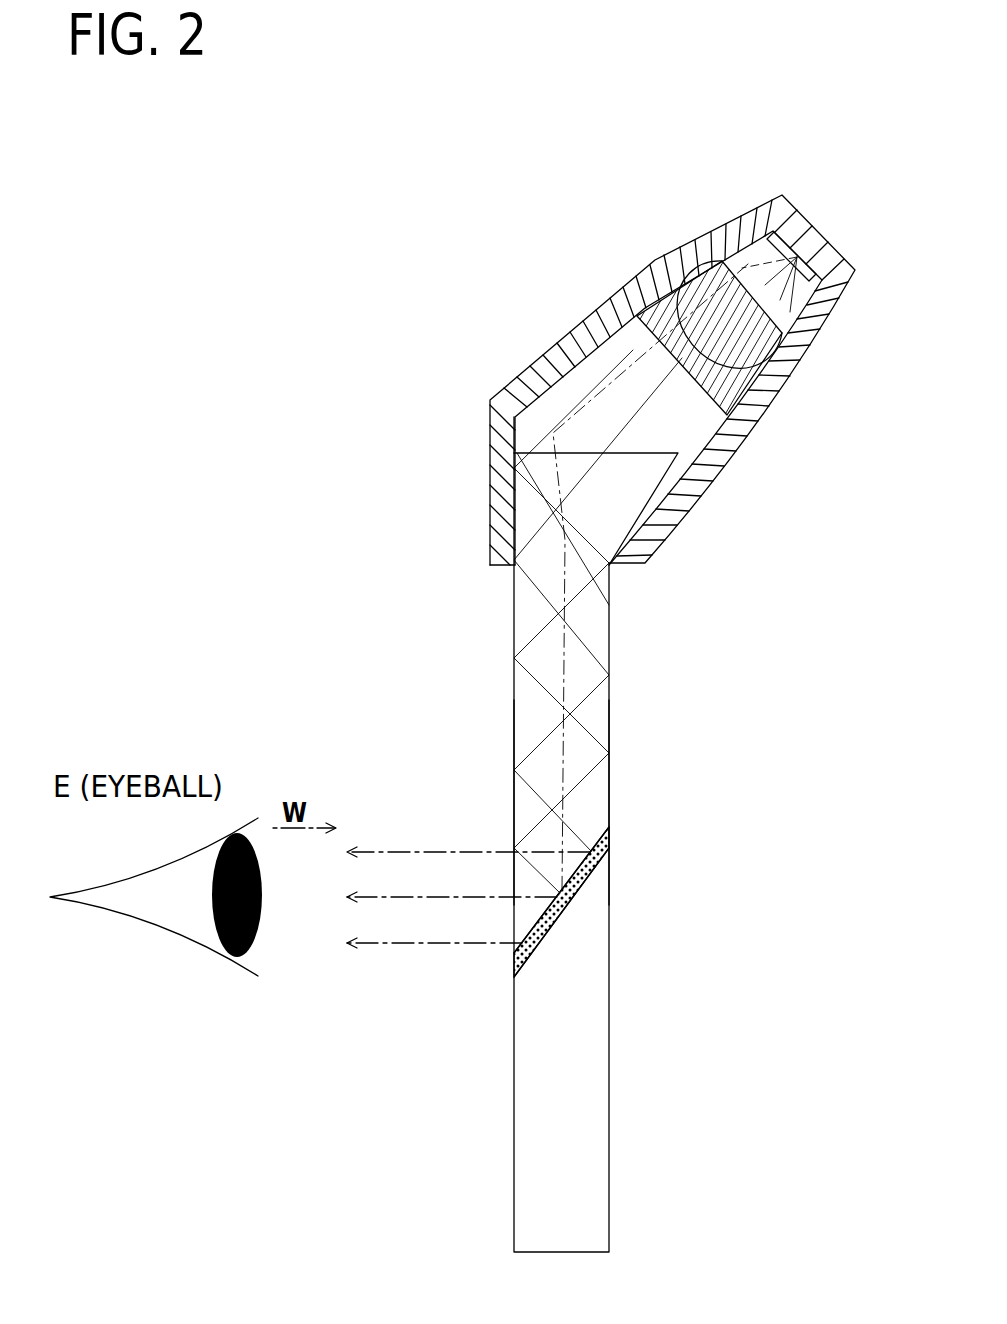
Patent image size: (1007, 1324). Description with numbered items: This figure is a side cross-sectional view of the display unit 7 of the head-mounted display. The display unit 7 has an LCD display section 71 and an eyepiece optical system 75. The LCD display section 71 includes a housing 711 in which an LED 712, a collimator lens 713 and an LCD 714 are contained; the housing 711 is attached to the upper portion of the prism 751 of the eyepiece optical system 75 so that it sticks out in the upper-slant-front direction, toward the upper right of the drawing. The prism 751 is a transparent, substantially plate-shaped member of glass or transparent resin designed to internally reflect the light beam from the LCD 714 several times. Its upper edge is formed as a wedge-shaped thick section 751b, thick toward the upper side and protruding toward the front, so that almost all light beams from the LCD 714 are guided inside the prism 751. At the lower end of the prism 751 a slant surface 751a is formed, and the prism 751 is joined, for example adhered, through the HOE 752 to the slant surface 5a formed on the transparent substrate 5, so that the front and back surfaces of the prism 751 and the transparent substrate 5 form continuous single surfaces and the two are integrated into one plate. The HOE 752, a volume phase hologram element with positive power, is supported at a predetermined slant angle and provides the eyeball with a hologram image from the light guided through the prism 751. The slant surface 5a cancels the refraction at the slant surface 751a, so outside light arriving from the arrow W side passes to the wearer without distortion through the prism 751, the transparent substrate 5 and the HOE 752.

The display unit 7 is at (398, 272).
The LCD display section 71 is at (706, 96).
The housing 711 is at (638, 324).
The LED 712 is at (780, 228).
The collimator lens 713 is at (712, 255).
The LCD 714 is at (656, 294).
The eyepiece optical system 75 is at (757, 692).
The prism 751 is at (587, 713).
The slant surface 751a is at (572, 882).
The thick section 751b is at (625, 485).
The HOE 752 is at (590, 868).
The transparent substrate 5 is at (586, 1067).
The slant surface 5a is at (540, 950).